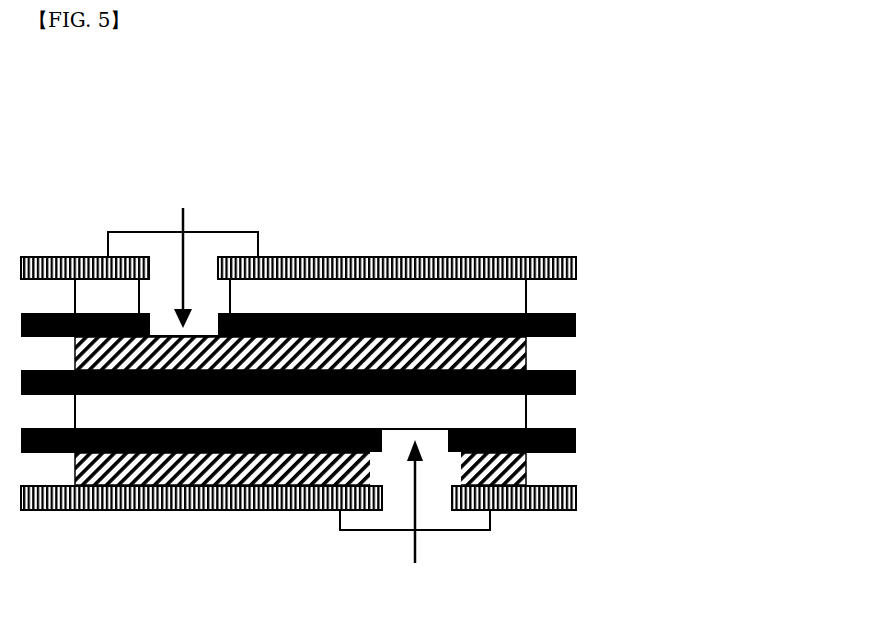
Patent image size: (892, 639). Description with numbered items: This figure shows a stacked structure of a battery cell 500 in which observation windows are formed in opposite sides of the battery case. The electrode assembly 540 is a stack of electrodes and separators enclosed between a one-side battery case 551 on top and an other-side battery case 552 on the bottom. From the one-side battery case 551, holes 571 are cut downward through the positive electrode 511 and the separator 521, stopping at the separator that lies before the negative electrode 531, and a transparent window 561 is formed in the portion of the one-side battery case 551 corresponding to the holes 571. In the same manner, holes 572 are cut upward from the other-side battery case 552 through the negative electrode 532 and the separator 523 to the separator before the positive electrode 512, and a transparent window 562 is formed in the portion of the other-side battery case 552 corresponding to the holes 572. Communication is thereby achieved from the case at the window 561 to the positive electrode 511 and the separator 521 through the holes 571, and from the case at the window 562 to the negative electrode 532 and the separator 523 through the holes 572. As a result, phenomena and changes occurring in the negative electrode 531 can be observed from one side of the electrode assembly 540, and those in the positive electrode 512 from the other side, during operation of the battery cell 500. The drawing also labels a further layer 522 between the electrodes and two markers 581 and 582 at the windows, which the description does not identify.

The battery cell 500 is at (97, 157).
The positive electrode 511 is at (526, 296).
The positive electrode 512 is at (526, 413).
The separator 521 is at (576, 322).
The second conductive layer 522 is at (576, 378).
The separator 523 is at (576, 435).
The negative electrode 531 is at (526, 354).
The negative electrode 532 is at (372, 469).
The electrode assembly 540 is at (393, 382).
The one-side battery case 551 is at (543, 257).
The other-side battery case 552 is at (542, 510).
The transparent window 561 is at (259, 232).
The transparent window 562 is at (340, 530).
The holes 571 is at (146, 299).
The holes 572 is at (442, 467).
The first light 581 is at (182, 256).
The second light 582 is at (416, 515).